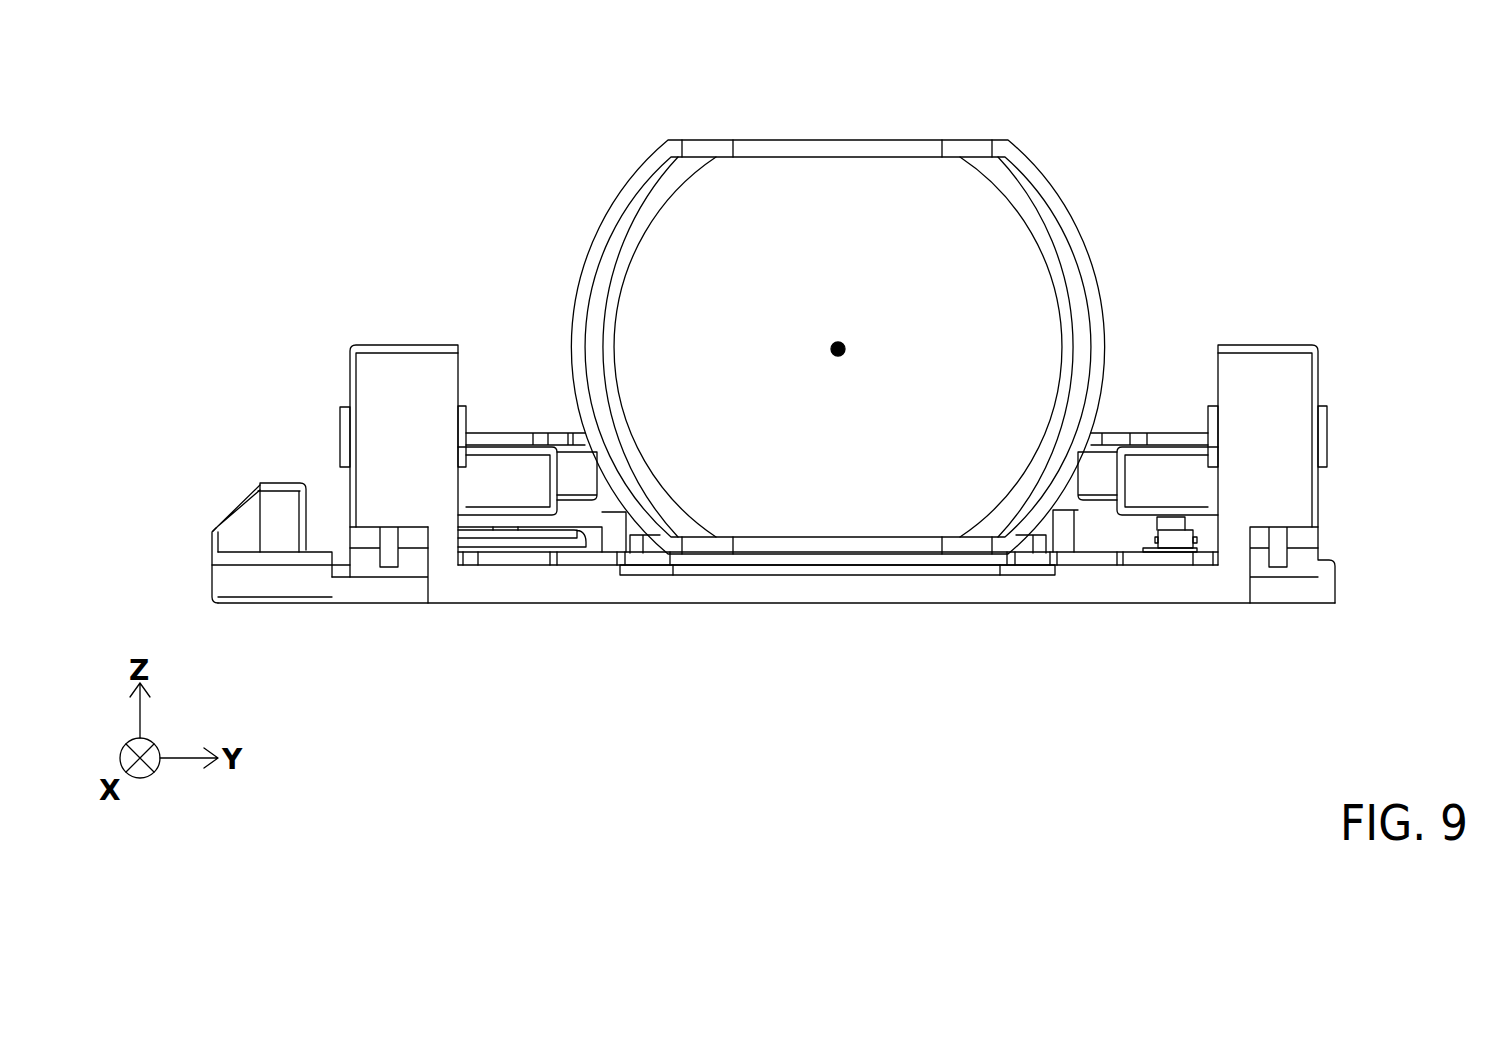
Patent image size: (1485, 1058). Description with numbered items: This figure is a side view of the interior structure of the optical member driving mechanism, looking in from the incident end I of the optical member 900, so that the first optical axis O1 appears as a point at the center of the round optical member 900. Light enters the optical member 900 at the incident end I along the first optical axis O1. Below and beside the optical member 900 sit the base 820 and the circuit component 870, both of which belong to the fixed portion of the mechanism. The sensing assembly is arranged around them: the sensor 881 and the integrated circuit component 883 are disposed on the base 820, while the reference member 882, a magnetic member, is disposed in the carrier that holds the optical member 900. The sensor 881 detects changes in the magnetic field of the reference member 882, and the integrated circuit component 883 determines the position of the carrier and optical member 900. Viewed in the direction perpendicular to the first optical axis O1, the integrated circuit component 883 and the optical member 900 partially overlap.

The incident end I is at (785, 220).
The optical member 900 is at (980, 282).
The first optical axis O1 is at (855, 365).
The reference member 882 is at (1170, 480).
The sensor 881 is at (1176, 541).
The integrated circuit component 883 is at (506, 535).
The circuit component 870 is at (303, 558).
The base 820 is at (247, 581).